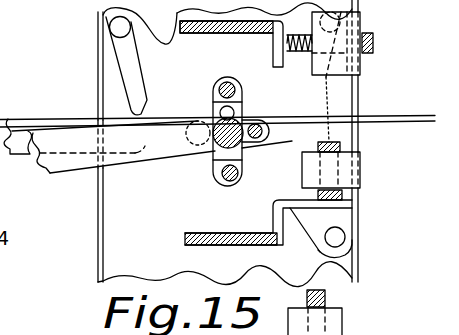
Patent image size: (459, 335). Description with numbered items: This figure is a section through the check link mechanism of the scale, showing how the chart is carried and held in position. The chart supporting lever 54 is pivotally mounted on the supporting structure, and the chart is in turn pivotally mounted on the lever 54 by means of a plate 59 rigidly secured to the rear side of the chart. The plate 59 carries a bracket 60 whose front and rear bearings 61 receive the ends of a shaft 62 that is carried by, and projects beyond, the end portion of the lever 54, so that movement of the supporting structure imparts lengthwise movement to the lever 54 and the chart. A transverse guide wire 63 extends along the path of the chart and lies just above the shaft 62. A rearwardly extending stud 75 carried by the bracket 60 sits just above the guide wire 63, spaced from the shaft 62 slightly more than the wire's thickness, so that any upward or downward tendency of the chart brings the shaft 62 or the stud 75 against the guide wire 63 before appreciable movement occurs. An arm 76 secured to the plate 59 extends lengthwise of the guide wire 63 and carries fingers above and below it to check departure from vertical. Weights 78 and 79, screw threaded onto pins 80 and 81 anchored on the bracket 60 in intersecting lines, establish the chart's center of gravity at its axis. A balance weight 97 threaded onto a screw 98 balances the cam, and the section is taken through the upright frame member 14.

The frame plate 14 is at (98, 70).
The chart supporting lever 54 is at (70, 174).
The plate 59 is at (140, 61).
The bracket 60 is at (245, 31).
The bearings 61 is at (247, 116).
The shaft 62 is at (238, 151).
The guide wire 63 is at (38, 124).
The stud 75 is at (215, 108).
The arm 76 is at (25, 156).
The weight 78 is at (361, 70).
The weight 79 is at (362, 170).
The pin 80 is at (374, 42).
The pin 81 is at (343, 196).
The balance weight 97 is at (343, 330).
The screw 98 is at (326, 302).